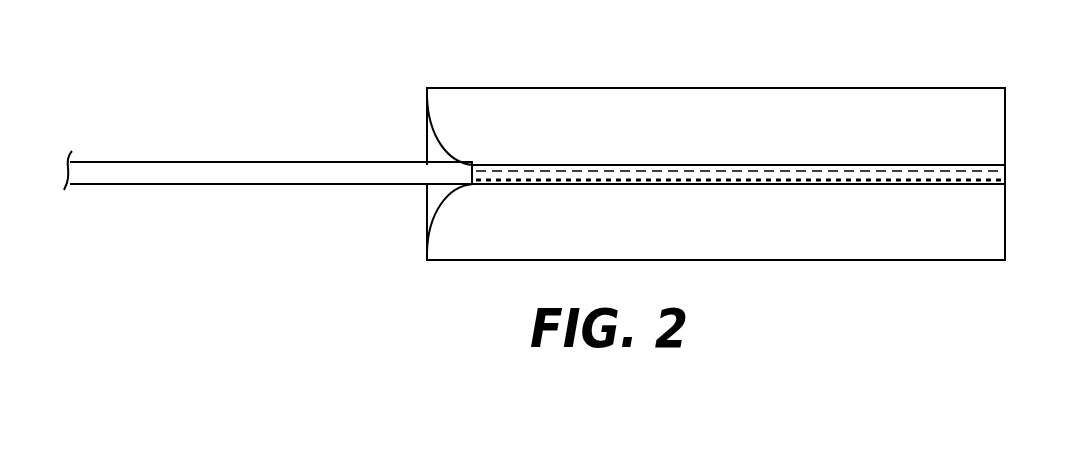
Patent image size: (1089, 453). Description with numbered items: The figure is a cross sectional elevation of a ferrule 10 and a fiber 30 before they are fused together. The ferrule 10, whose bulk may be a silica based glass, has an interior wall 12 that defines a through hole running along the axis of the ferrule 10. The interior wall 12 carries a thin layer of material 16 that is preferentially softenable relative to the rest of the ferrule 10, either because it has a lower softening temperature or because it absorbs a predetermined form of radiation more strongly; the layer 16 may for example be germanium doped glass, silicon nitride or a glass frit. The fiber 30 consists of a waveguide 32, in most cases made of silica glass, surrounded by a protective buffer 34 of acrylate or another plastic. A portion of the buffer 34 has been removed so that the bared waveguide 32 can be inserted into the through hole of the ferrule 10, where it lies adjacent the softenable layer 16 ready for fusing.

The ferrule 10 is at (718, 76).
The interior wall 12 is at (940, 185).
The thin layer of material 16 is at (842, 168).
The fiber 30 is at (330, 188).
The waveguide 32 is at (1005, 174).
The protective buffer 34 is at (330, 160).